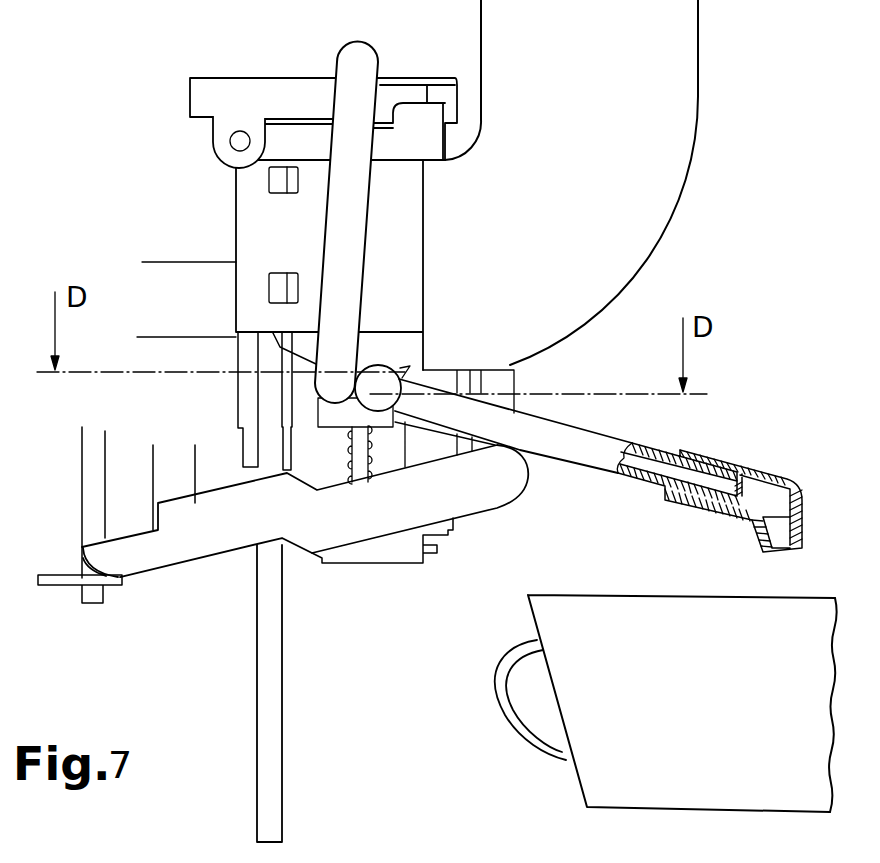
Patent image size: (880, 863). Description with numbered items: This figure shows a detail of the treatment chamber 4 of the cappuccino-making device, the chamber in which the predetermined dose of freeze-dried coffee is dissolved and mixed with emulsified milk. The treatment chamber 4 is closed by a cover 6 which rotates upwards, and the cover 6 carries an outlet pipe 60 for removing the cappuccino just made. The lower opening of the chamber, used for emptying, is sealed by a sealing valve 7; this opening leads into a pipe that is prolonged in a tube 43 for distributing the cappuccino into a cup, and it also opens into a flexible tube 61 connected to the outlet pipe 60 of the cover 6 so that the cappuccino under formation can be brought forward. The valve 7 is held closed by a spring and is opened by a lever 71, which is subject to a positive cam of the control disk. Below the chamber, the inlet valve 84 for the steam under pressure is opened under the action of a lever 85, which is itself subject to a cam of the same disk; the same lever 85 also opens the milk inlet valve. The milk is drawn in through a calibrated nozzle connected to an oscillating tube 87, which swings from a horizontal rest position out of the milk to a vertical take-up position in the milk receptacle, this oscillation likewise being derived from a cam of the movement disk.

The treatment chamber 4 is at (421, 233).
The cover 6 is at (291, 85).
The sealing valve 7 is at (362, 452).
The tube 43 is at (356, 293).
The outlet pipe 60 is at (368, 88).
The flexible tube 61 is at (332, 243).
The lever 71 is at (400, 555).
The inlet valve 84 is at (81, 478).
The lever 85 is at (167, 553).
The oscillating tube 87 is at (281, 718).